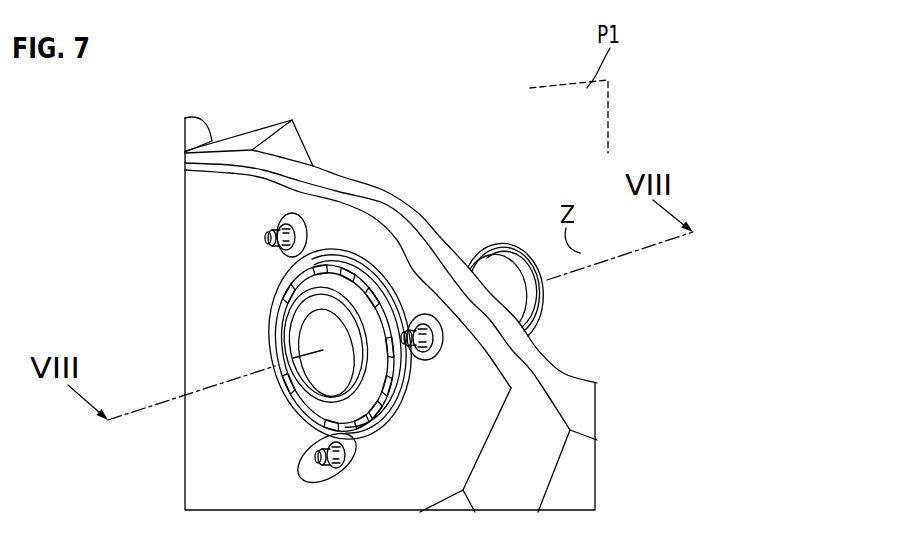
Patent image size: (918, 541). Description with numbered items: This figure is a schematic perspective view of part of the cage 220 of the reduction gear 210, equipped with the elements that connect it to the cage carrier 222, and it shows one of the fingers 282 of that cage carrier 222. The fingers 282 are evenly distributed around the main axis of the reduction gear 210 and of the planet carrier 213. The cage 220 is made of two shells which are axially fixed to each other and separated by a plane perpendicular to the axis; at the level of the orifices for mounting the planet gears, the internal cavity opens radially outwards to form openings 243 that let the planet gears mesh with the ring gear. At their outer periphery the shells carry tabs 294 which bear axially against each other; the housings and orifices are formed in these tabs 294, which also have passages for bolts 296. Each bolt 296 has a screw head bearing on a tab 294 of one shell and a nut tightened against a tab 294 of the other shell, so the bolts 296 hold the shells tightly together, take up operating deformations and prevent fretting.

The reduction gear 210 is at (755, 78).
The planet carrier 213 is at (888, 73).
The cage 220 is at (370, 148).
The tabs 294 is at (393, 227).
The cage carrier 222 is at (507, 217).
The finger 282 is at (515, 292).
The openings 243 is at (583, 470).
The bolts 296 is at (284, 230).